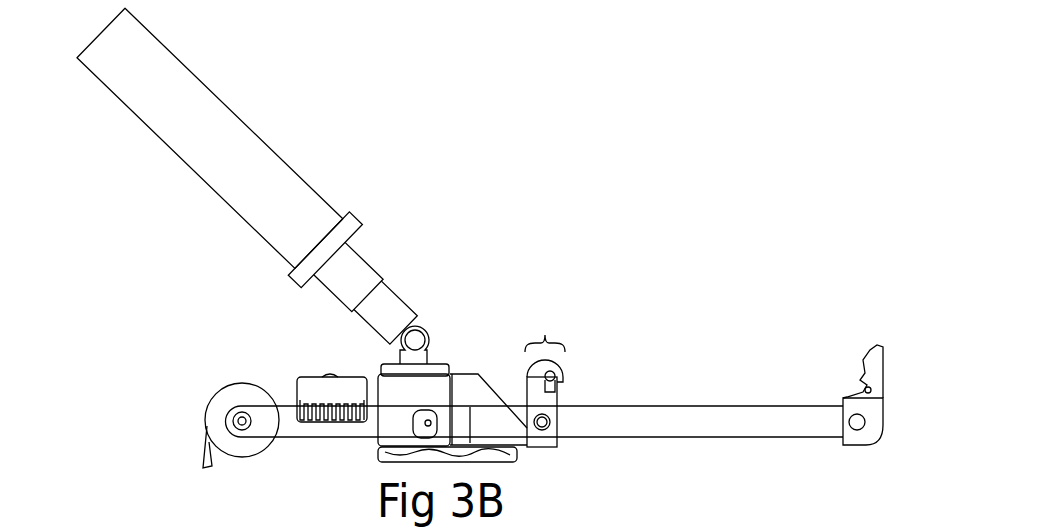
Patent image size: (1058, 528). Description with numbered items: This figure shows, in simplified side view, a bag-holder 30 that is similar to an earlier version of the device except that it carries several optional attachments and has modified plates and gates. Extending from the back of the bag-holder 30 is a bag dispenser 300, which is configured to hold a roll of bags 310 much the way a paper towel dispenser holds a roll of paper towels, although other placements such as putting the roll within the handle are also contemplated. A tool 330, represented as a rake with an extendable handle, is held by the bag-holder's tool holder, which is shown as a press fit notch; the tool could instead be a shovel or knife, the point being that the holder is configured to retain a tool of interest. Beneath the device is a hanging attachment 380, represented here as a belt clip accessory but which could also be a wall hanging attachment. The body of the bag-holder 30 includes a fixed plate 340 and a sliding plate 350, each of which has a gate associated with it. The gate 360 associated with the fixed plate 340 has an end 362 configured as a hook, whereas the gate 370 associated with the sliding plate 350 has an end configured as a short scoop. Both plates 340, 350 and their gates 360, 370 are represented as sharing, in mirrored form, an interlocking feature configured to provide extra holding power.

The bag-holder 30 is at (537, 190).
The bag dispenser 300 is at (237, 422).
The roll of bags 310 is at (212, 402).
The tool 330 is at (313, 392).
The fixed plate 340 is at (550, 387).
The sliding plate 350 is at (848, 440).
The gate 360 is at (537, 382).
The end 362 is at (553, 327).
The gate 370 is at (877, 345).
The hanging attachment 380 is at (502, 455).